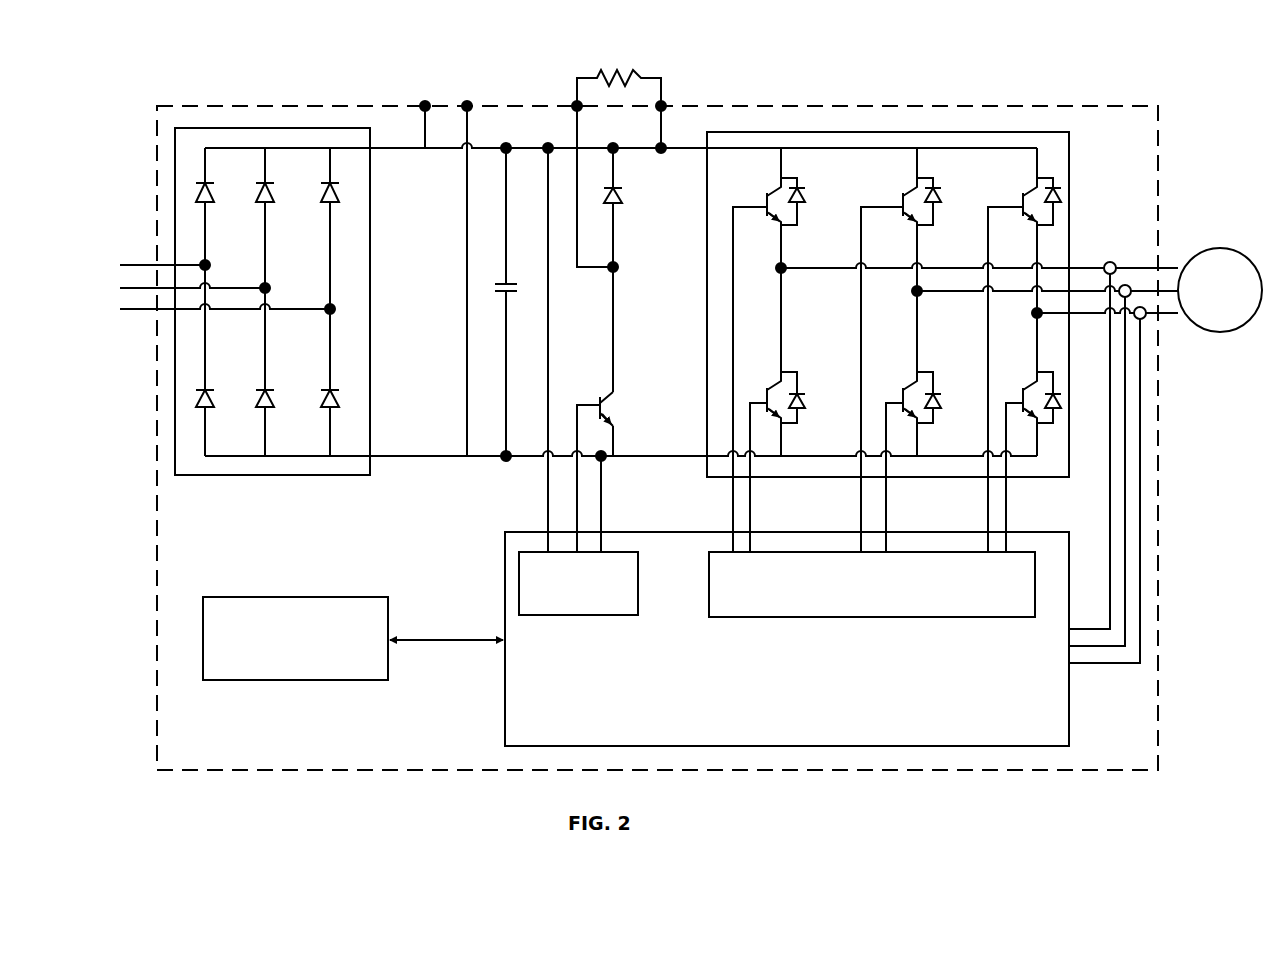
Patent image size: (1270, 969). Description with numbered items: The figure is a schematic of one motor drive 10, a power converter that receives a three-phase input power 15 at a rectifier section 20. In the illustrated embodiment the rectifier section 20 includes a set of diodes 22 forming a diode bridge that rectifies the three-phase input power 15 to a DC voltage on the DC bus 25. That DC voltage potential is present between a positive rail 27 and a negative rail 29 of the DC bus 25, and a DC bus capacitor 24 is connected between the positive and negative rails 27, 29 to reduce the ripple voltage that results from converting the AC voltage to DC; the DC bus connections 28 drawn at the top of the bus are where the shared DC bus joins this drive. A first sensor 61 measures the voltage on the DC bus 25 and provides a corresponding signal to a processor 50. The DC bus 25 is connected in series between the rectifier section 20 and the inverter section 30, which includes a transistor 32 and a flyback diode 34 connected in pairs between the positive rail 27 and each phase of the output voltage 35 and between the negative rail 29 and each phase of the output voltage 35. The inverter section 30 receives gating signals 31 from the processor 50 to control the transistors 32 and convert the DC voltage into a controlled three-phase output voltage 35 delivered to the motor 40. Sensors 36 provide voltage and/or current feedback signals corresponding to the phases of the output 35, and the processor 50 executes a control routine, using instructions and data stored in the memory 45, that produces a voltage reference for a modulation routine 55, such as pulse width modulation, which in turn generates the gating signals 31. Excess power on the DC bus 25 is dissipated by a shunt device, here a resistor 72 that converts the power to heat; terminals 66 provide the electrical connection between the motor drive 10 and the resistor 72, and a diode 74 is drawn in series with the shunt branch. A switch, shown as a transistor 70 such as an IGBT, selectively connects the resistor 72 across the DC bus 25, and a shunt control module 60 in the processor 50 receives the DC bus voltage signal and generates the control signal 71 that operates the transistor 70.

The motor drive 10 is at (175, 104).
The three-phase input power 15 is at (123, 264).
The rectifier section 20 is at (370, 295).
The diodes 22 is at (332, 178).
The DC bus capacitor 24 is at (504, 296).
The DC bus 25 is at (395, 144).
The positive rail 27 is at (400, 150).
The DC bus terminals 28 is at (465, 100).
The negative rail 29 is at (402, 454).
The inverter section 30 is at (955, 130).
The gating signals 31 is at (765, 190).
The transistor 32 is at (762, 208).
The flyback diode 34 is at (812, 196).
The output voltage 35 is at (1162, 262).
The sensors 36 is at (1138, 307).
The motor 40 is at (1218, 248).
The memory 45 is at (247, 682).
The processor 50 is at (1019, 712).
The modulation routine 55 is at (874, 619).
The shunt control module 60 is at (578, 617).
The first sensor 61 is at (545, 144).
The terminals 66 is at (650, 110).
The transistor 70 is at (620, 399).
The control signal 71 is at (580, 405).
The resistor 72 is at (619, 100).
The shunt diode 74 is at (625, 194).